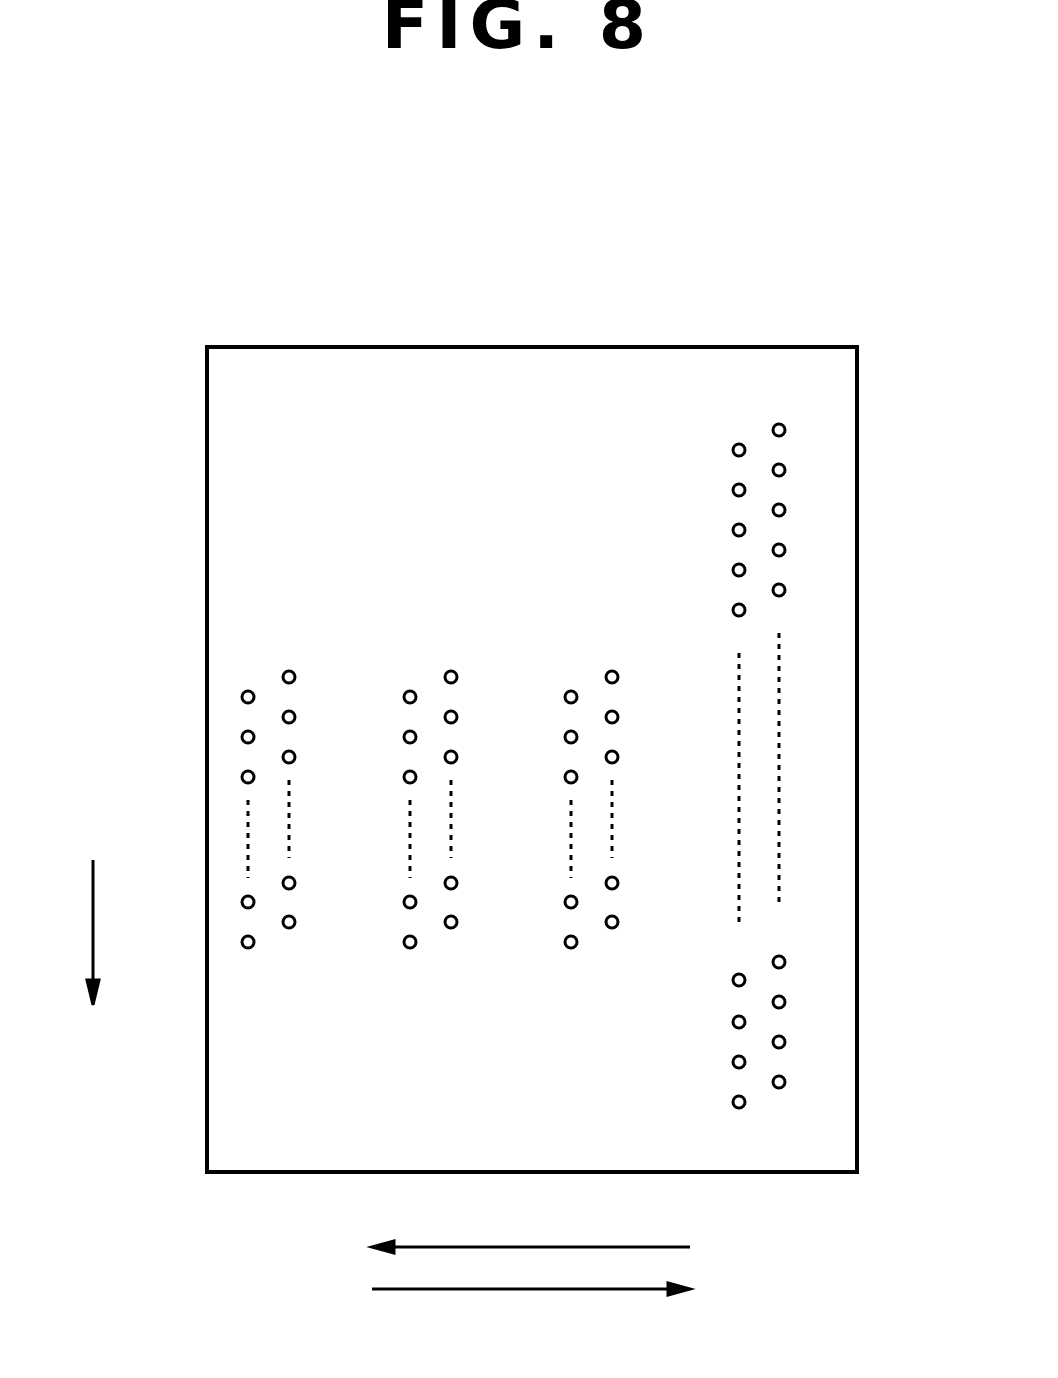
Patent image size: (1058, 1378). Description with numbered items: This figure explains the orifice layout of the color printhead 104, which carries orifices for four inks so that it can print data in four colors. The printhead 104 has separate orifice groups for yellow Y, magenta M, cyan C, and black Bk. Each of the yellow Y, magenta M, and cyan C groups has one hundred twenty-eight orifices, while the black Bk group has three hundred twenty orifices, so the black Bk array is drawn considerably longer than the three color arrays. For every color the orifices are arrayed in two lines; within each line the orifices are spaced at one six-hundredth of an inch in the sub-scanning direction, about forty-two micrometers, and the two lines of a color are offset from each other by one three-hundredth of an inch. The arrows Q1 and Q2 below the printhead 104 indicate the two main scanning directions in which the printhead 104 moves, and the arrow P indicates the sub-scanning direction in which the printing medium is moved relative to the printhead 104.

The printhead 104 is at (527, 346).
The magenta orifices M is at (268, 742).
The yellow orifices Y is at (430, 742).
The cyan orifices C is at (591, 742).
The black orifices Bk is at (759, 738).
The sub-scanning direction arrow P is at (105, 932).
The main scanning direction arrow Q1 is at (558, 1291).
The main scanning direction arrow Q2 is at (558, 1246).